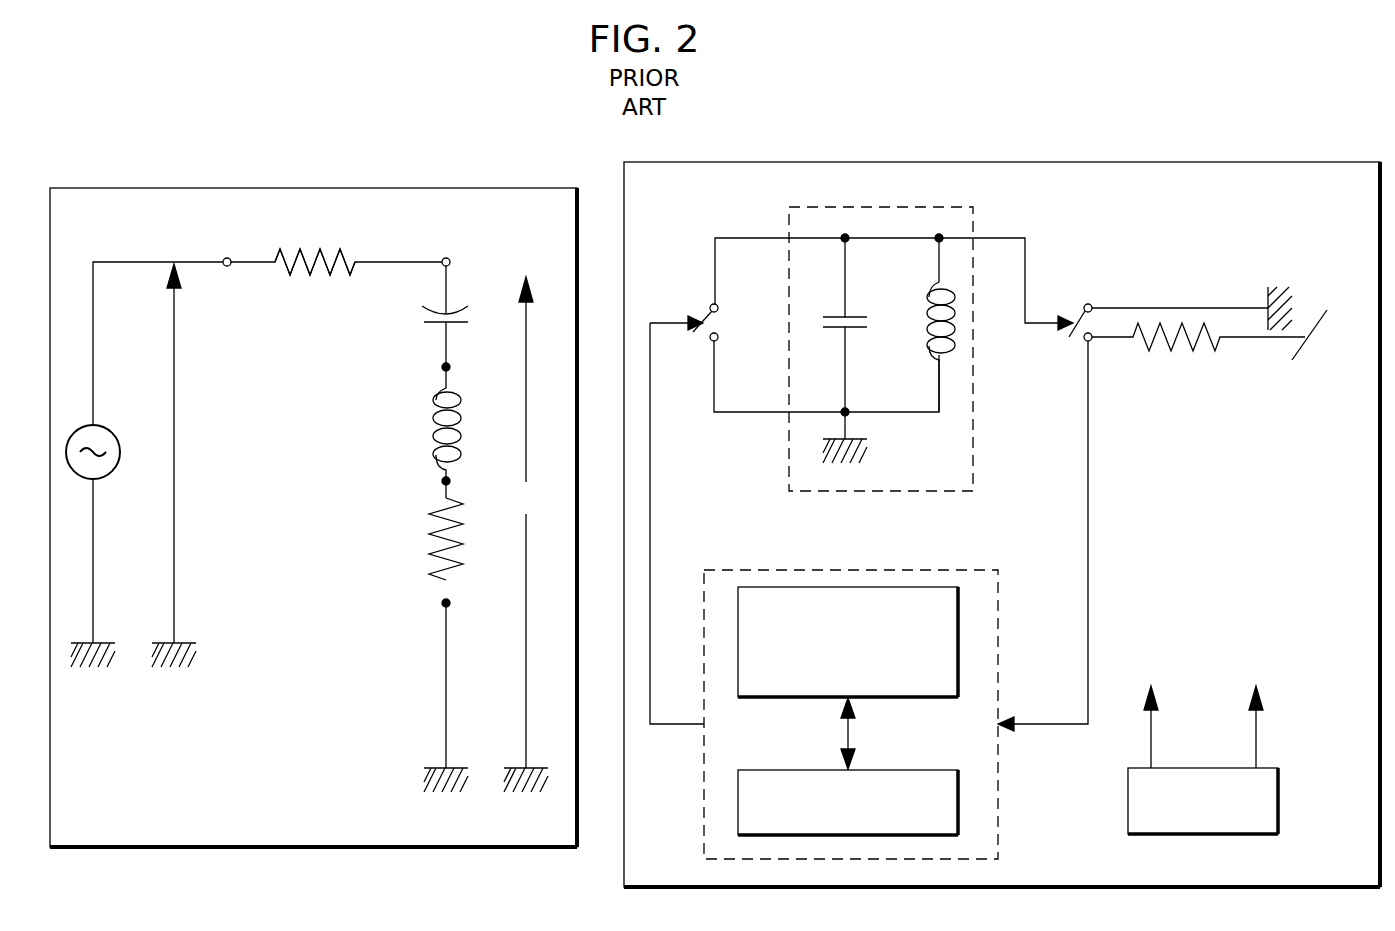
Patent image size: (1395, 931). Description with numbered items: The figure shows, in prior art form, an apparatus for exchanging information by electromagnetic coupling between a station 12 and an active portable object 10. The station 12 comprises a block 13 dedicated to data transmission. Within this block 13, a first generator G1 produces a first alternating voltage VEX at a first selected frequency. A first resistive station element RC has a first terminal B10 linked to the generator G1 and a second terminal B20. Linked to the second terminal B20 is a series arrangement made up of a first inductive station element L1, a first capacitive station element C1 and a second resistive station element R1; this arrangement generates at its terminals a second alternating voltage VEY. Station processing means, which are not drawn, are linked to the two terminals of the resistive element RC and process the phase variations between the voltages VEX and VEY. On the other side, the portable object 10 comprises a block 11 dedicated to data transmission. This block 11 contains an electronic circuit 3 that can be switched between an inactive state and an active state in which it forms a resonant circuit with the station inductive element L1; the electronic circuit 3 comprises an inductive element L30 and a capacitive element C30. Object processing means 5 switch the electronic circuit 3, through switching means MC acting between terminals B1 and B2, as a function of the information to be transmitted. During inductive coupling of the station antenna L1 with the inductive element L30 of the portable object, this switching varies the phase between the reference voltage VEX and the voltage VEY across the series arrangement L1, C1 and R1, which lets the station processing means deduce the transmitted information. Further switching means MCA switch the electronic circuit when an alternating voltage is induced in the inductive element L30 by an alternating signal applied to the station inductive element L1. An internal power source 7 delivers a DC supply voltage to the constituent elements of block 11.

The station 12 is at (279, 197).
The block dedicated to data transmission 13 is at (317, 608).
The portable object 10 is at (989, 173).
The electronic circuit 3 is at (963, 460).
The object processing means 5 is at (982, 823).
The internal power source 7 is at (1280, 811).
The block dedicated to data transmission 11 is at (1144, 534).
The first terminal B10 is at (225, 258).
The second terminal B20 is at (447, 258).
The first resistive station element RC is at (312, 250).
The first capacitive station element C1 is at (430, 316).
The first inductive station element L1 is at (432, 428).
The second resistive station element R1 is at (430, 543).
The first generator G1 is at (112, 432).
The first alternating voltage VEX is at (174, 453).
The second alternating voltage VEY is at (526, 522).
The switching means MC is at (699, 321).
The switch terminal B1 is at (719, 308).
The switch terminal B2 is at (719, 338).
The capacitive element C30 is at (866, 322).
The inductive element L30 is at (927, 323).
The switching means MCA is at (1080, 305).